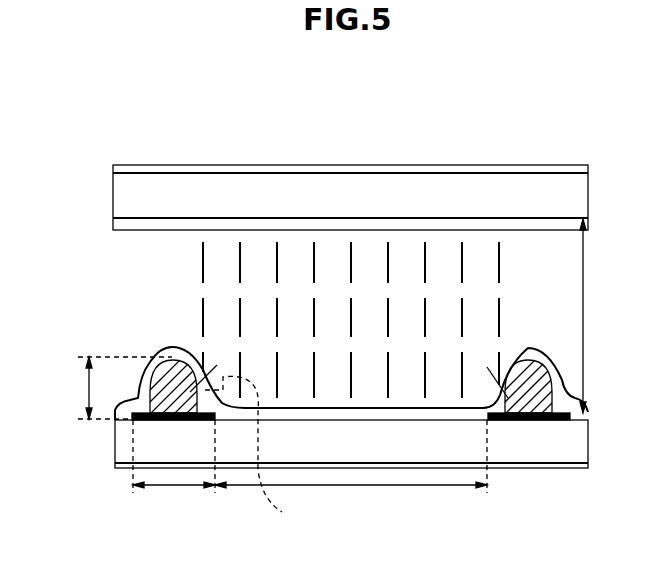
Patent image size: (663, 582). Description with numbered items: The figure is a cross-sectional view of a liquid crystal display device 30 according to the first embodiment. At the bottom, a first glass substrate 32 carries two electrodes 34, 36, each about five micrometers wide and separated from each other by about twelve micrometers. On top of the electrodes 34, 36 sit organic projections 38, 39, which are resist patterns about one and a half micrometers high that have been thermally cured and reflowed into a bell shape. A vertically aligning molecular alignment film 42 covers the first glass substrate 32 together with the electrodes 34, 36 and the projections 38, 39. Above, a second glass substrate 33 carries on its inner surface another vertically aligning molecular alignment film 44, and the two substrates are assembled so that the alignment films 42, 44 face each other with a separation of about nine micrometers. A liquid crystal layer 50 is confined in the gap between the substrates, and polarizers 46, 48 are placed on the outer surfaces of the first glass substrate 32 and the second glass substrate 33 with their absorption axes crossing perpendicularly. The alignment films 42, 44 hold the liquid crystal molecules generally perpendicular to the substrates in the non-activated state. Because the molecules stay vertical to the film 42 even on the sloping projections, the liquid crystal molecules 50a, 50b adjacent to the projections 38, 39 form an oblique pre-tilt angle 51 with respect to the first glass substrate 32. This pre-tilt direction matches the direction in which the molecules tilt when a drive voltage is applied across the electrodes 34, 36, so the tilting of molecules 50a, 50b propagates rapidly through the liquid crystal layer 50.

The liquid crystal display device 30 is at (78, 141).
The first glass substrate 32 is at (515, 453).
The second glass substrate 33 is at (413, 190).
The electrode 34 is at (141, 407).
The electrode 36 is at (571, 402).
The organic projection 38 is at (172, 362).
The organic projection 39 is at (532, 370).
The molecular alignment film 42 is at (397, 413).
The molecular alignment film 44 is at (291, 222).
The polarizer 46 is at (558, 468).
The polarizer 48 is at (500, 167).
The liquid crystal layer 50 is at (525, 261).
The liquid crystal molecule 50a is at (208, 390).
The liquid crystal molecule 50b is at (495, 393).
The pre-tilt angle 51 is at (259, 452).